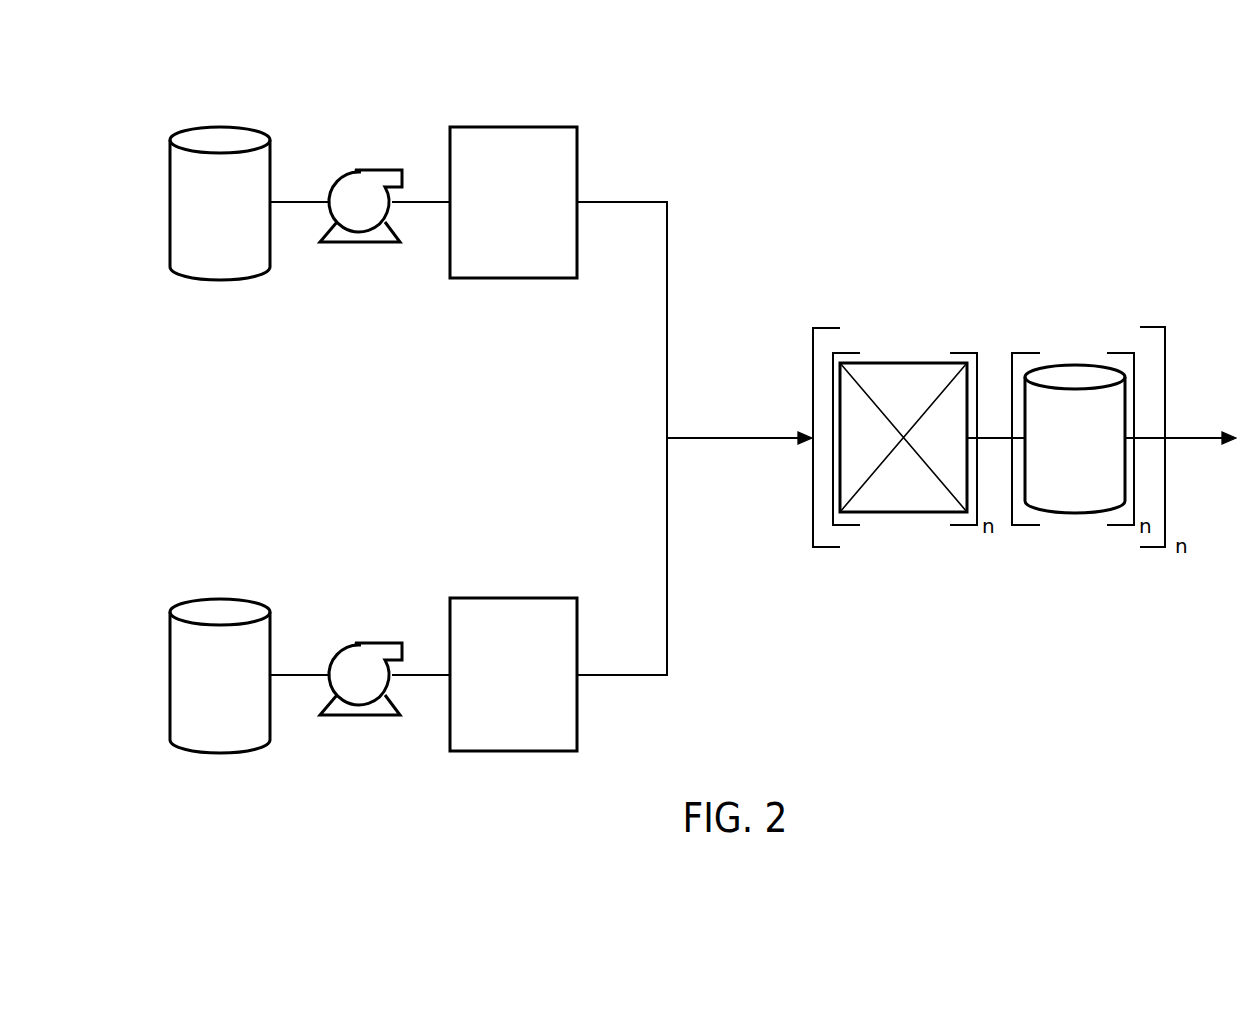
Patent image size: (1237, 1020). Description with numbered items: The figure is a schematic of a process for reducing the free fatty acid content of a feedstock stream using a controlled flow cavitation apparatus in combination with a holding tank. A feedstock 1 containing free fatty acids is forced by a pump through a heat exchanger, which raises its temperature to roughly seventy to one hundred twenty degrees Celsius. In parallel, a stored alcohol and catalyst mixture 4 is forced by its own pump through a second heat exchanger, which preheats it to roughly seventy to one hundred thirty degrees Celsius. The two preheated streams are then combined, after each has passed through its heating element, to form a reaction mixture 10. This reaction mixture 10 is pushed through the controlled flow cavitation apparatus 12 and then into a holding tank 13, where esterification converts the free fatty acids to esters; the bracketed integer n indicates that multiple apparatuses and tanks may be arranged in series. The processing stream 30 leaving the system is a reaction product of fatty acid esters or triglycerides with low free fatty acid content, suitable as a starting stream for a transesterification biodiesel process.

The feedstock 1 is at (220, 127).
The alcohol and catalyst mixture 4 is at (218, 600).
The reaction mixture 10 is at (741, 438).
The controlled flow cavitation apparatus 12 is at (907, 363).
The holding tank 13 is at (1068, 372).
The processing stream 30 is at (1202, 438).